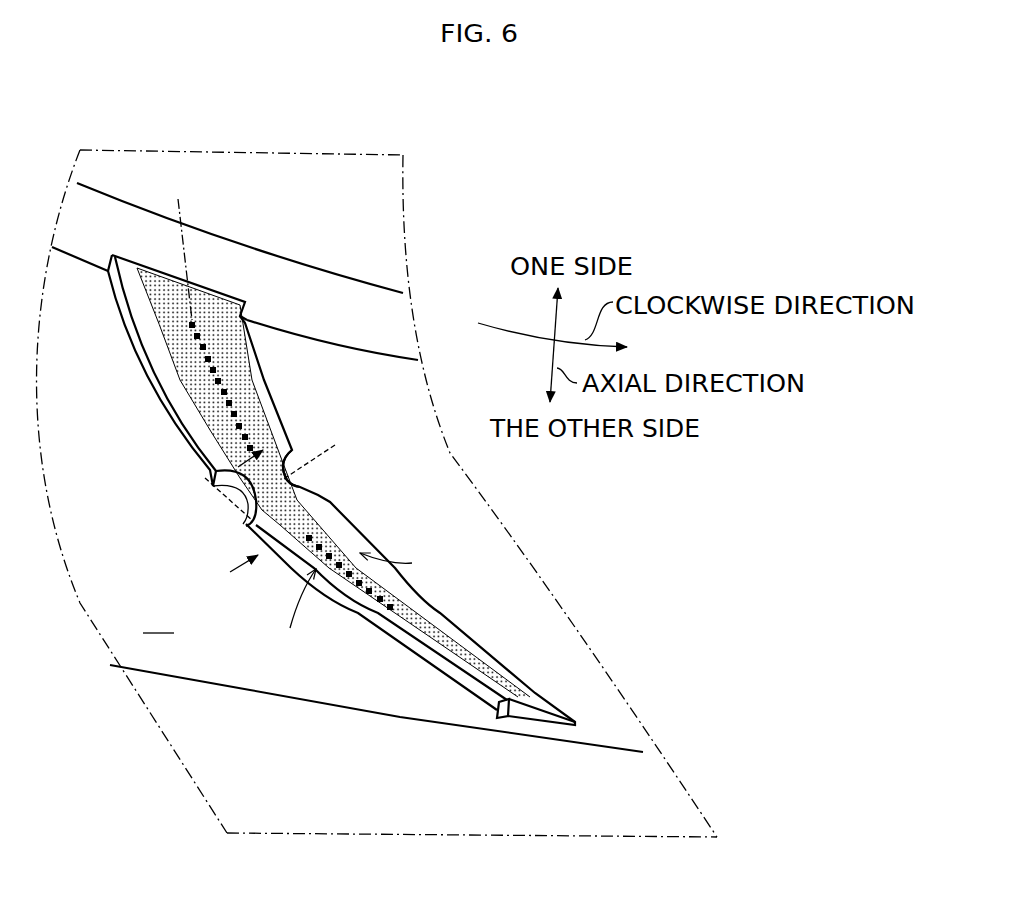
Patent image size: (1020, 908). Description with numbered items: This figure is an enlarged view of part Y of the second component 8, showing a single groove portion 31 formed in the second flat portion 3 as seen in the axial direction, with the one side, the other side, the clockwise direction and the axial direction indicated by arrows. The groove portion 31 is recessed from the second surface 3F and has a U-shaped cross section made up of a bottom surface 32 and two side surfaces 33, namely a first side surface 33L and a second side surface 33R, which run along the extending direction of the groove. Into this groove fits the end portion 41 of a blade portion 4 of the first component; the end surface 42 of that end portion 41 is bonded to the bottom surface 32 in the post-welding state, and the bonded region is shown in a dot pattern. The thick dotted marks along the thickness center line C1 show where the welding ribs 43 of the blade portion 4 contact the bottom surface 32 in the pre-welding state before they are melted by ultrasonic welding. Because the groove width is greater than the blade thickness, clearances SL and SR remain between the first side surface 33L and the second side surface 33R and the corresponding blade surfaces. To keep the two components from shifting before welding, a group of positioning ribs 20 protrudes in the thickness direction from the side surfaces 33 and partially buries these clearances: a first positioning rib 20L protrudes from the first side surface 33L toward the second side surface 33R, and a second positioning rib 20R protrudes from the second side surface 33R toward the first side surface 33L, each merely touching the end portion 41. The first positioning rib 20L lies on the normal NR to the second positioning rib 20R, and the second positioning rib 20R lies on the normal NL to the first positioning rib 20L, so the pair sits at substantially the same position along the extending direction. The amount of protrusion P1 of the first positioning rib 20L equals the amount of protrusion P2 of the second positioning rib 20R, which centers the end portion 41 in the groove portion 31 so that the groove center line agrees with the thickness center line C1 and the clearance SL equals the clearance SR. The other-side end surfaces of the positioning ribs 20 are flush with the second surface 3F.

The second flat portion 3 is at (247, 699).
The second surface 3F is at (158, 621).
The blade portion 4 is at (296, 485).
The second component 8 is at (413, 304).
The positioning ribs 20 is at (280, 519).
The first positioning rib 20L is at (305, 488).
The second positioning rib 20R is at (240, 523).
The groove portion 31 is at (357, 615).
The bottom surface 32 is at (137, 300).
The side surfaces 33 is at (333, 488).
The first side surface 33L is at (247, 321).
The second side surface 33R is at (294, 482).
The end portion 41 is at (296, 485).
The end surface 42 is at (296, 451).
The welding ribs 43 is at (190, 348).
The thickness center line C1 is at (179, 246).
The amount of protrusion of the first positioning rib P1 is at (287, 433).
The amount of protrusion of the second positioning rib P2 is at (297, 528).
The normal to the first positioning rib NL is at (298, 457).
The normal to the second positioning rib NR is at (229, 503).
The clearance SL is at (402, 572).
The clearance SR is at (295, 613).
The part Y is at (380, 834).